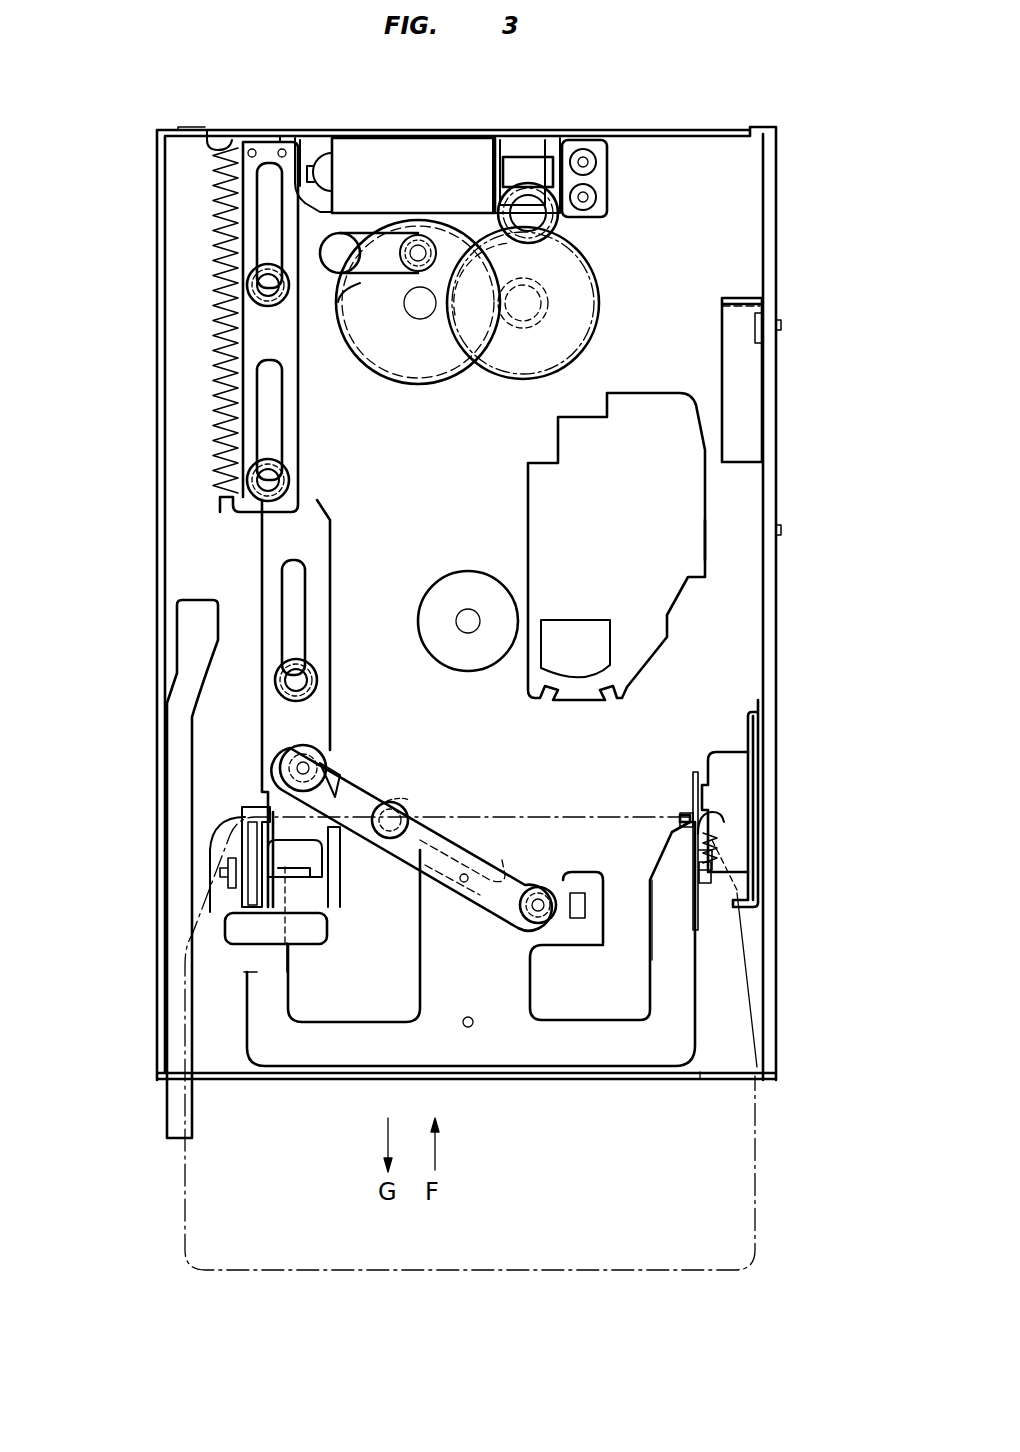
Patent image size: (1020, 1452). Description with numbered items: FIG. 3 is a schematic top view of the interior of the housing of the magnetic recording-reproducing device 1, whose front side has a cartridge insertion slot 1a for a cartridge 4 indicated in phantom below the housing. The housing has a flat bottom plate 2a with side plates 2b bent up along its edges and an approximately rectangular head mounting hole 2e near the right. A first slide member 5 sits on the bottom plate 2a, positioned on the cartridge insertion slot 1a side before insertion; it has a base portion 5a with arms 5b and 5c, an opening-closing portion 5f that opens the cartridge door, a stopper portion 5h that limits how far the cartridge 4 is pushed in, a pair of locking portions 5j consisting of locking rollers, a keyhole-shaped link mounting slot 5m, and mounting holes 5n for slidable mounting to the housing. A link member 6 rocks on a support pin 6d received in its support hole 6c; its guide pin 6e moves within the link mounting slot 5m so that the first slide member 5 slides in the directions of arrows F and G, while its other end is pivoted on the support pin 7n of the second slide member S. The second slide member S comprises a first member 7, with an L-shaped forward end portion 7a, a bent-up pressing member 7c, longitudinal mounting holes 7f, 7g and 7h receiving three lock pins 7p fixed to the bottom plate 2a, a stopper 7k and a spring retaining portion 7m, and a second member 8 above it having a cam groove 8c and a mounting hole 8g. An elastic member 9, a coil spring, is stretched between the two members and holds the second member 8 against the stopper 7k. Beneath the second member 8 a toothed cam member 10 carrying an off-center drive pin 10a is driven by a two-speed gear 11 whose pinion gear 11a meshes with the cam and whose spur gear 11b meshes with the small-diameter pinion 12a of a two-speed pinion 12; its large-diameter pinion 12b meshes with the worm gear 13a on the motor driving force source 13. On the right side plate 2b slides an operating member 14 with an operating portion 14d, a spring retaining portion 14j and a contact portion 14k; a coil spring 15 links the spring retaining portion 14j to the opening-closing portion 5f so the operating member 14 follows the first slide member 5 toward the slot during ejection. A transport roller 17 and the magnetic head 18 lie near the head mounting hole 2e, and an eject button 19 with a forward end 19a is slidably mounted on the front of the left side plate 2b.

The recording-reproducing device 1 is at (631, 130).
The cartridge insertion slot 1a is at (703, 1074).
The bottom plate 2a is at (440, 515).
The side plates 2b is at (158, 962).
The head mounting hole 2e is at (668, 545).
The cartridge 4 is at (728, 1220).
The first slide member 5 is at (586, 1046).
The base portion 5a is at (628, 1040).
The arm 5b is at (680, 1000).
The arm 5c is at (253, 972).
The opening-closing portion 5f is at (718, 860).
The stopper portion 5h is at (262, 780).
The locking portions 5j is at (228, 872).
The link mounting slot 5m is at (575, 895).
The mounting holes 5n is at (469, 1028).
The link member 6 is at (424, 818).
The support hole 6c is at (388, 800).
The support pin 6d is at (395, 782).
The guide pin 6e is at (538, 890).
The first member 7 is at (258, 540).
The forward end portion 7a is at (262, 928).
The pressing member 7c is at (300, 877).
The mounting hole 7f is at (294, 605).
The mounting hole 7g is at (268, 410).
The mounting hole 7h is at (268, 222).
The stopper 7k is at (275, 142).
The spring retaining portion 7m is at (207, 140).
The support pin 7n is at (290, 758).
The lock pins 7p is at (268, 287).
The second member 8 is at (352, 238).
The cam groove 8c is at (340, 245).
The mounting hole 8g is at (225, 507).
The elastic member 9 is at (215, 375).
The cam member 10 is at (392, 352).
The drive pin 10a is at (420, 245).
The two-speed gear 11 is at (605, 295).
The pinion gear 11a is at (575, 265).
The spur gear 11b is at (595, 270).
The two-speed pinion 12 is at (528, 215).
The small-diameter pinion 12a is at (518, 195).
The large-diameter pinion 12b is at (565, 195).
The driving force source 13 is at (407, 162).
The worm gear 13a is at (535, 190).
The operating member 14 is at (757, 735).
The operating portion 14d is at (738, 300).
The spring retaining portion 14j is at (708, 828).
The contact portion 14k is at (710, 790).
The coil spring 15 is at (712, 842).
The transport roller 17 is at (445, 648).
The magnetic head 18 is at (592, 652).
The eject button 19 is at (180, 1032).
The forward end 19a is at (178, 1140).
The second slide member S is at (265, 322).